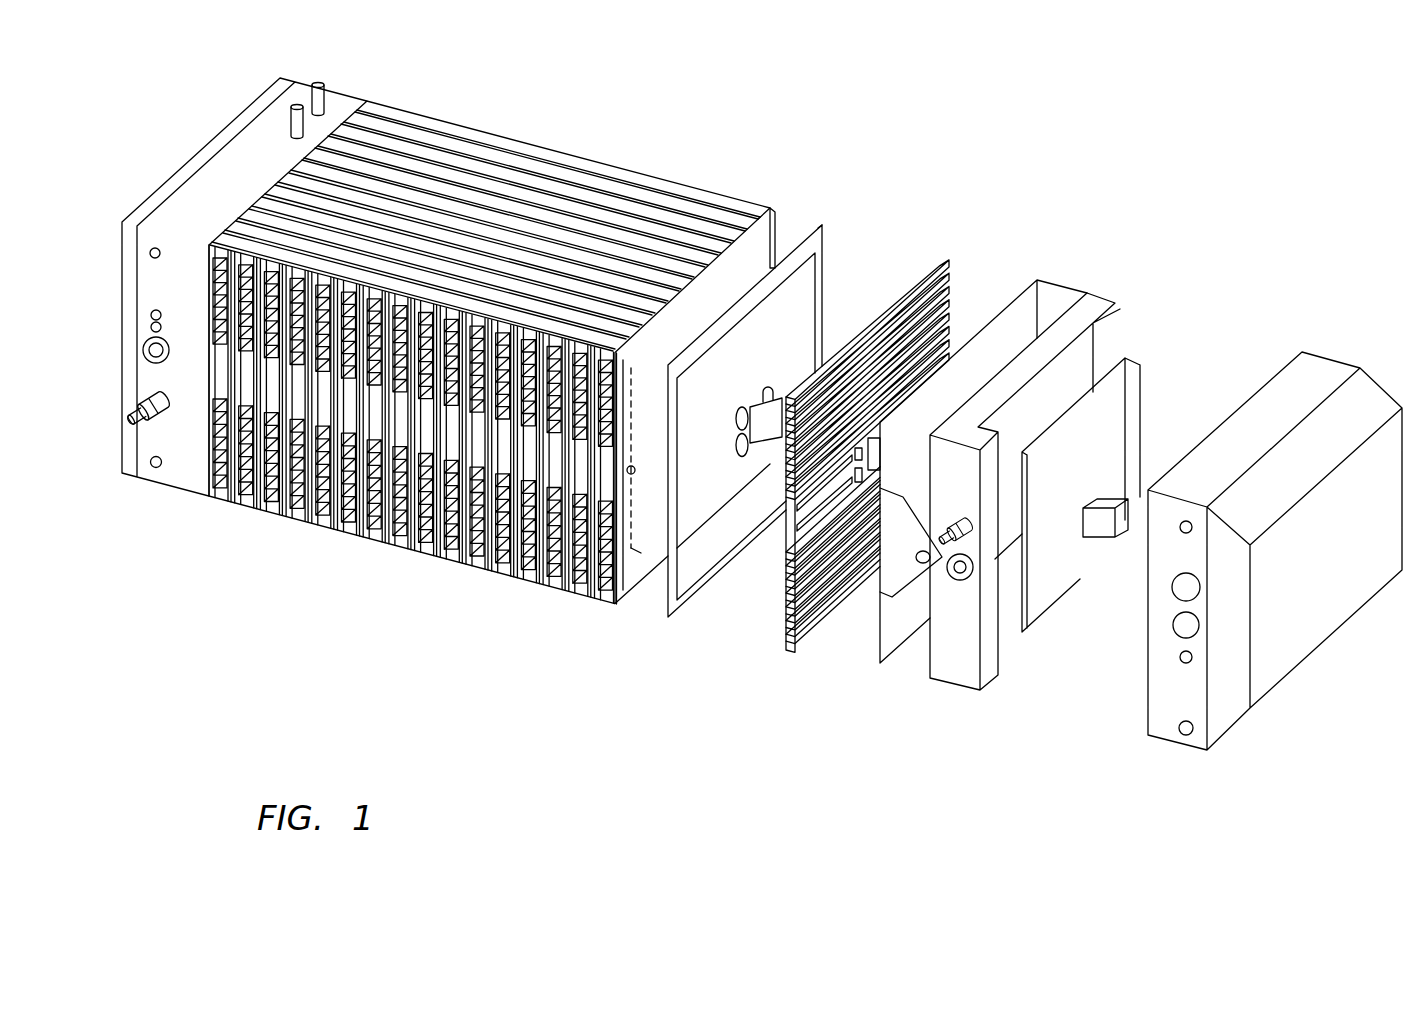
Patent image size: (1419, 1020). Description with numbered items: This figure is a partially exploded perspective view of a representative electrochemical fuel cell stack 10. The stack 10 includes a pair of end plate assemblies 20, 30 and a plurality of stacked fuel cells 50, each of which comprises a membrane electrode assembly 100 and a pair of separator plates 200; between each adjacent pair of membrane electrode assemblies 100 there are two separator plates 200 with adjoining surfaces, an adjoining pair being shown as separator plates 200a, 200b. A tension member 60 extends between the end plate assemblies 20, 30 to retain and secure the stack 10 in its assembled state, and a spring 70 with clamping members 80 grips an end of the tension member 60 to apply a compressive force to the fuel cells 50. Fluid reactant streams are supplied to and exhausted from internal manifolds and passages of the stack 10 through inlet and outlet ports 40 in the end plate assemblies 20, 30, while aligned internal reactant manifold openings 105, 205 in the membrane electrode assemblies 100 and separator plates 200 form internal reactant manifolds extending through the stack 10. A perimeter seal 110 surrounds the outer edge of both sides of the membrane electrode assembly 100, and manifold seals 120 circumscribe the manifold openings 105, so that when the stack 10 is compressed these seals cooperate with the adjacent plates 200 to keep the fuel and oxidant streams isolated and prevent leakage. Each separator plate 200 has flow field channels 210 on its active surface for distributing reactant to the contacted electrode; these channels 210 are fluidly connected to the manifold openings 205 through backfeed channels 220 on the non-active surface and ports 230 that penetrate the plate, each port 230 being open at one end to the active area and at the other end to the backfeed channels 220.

The electrochemical fuel cell stack 10 is at (1008, 192).
The end plate assembly 20 is at (975, 774).
The end plate assembly 30 is at (191, 551).
The inlet and outlet ports 40 is at (134, 421).
The fuel cells 50 is at (796, 678).
The tension member 60 is at (1148, 490).
The spring 70 is at (1108, 417).
The clamping members 80 is at (1097, 527).
The membrane electrode assembly 100 is at (749, 199).
The internal reactant manifold openings 105 is at (742, 406).
The perimeter seal 110 is at (819, 226).
The manifold seals 120 is at (736, 417).
The separator plates 200 is at (946, 258).
The separator plate 200a is at (752, 197).
The separator plate 200b is at (772, 201).
The internal reactant manifold openings 205 is at (865, 430).
The flow field channels 210 is at (639, 365).
The backfeed channels 220 is at (797, 510).
The ports 230 is at (635, 472).